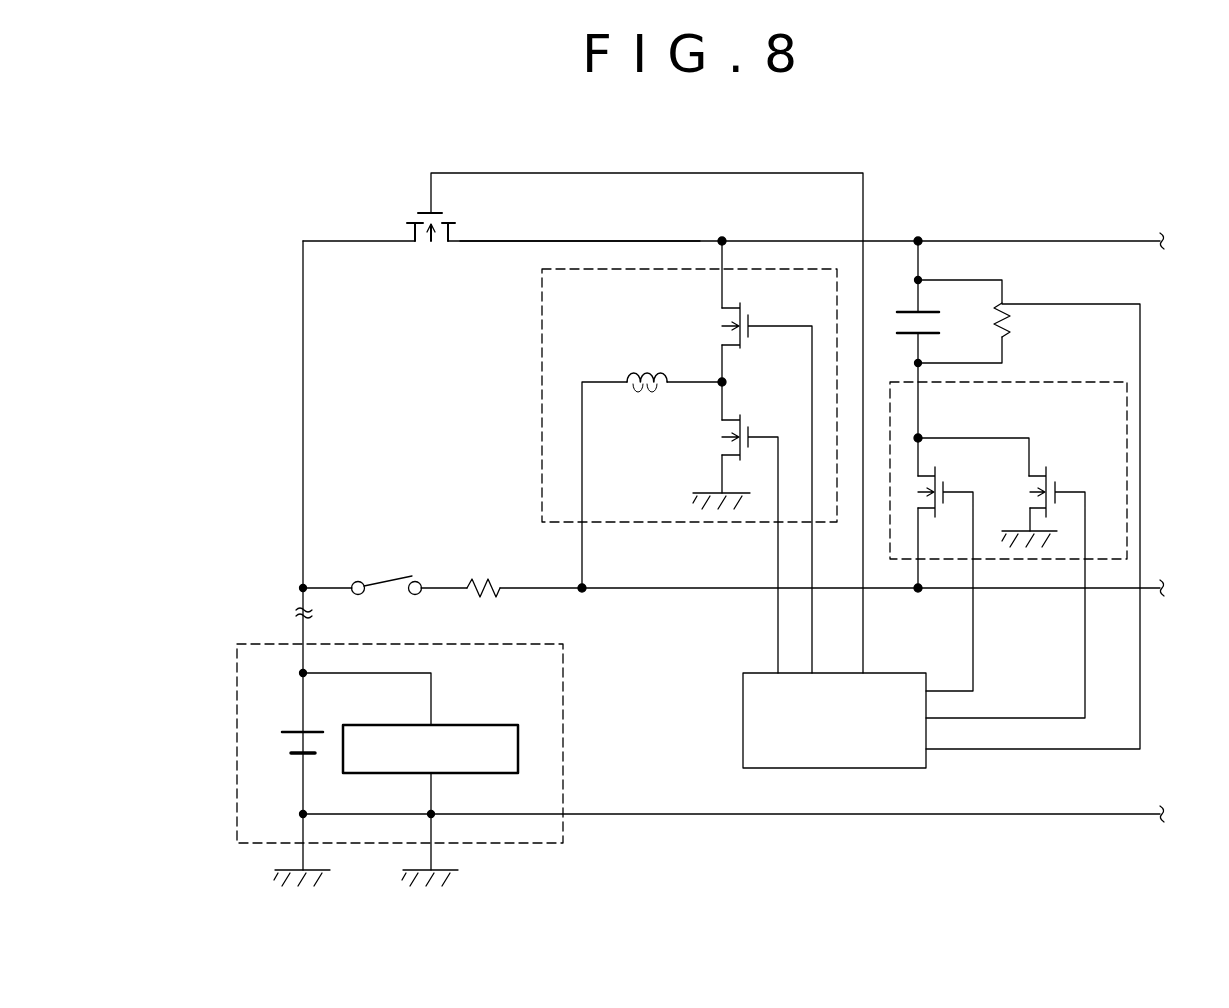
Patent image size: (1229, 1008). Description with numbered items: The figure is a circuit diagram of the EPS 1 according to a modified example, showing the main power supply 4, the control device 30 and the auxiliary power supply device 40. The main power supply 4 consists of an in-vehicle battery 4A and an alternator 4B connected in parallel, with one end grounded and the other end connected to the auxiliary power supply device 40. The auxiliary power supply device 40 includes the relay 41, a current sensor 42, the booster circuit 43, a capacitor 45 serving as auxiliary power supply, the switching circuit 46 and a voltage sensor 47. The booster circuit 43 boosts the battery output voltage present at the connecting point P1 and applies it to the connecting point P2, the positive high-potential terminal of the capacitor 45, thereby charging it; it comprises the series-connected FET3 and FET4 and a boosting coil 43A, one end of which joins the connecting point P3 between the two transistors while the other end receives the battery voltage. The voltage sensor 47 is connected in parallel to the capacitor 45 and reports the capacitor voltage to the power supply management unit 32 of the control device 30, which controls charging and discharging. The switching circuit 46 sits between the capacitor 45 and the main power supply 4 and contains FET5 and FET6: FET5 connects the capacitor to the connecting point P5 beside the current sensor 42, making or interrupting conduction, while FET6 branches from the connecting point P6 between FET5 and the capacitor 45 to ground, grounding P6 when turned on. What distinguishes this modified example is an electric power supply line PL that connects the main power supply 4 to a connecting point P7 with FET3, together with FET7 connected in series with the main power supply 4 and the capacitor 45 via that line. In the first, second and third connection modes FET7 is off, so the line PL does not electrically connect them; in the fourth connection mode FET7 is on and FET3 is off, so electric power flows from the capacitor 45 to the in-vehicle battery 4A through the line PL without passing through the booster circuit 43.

The EPS 1 is at (188, 132).
The FET 7 FET7 is at (398, 200).
The electric power supply line PL is at (572, 238).
The connecting point P7 is at (722, 238).
The connecting point P2 is at (918, 238).
The auxiliary power supply device 40 is at (472, 368).
The booster circuit 43 is at (541, 322).
The boosting coil 43A is at (643, 356).
The FET 3 FET3 is at (784, 305).
The connecting point P3 is at (720, 386).
The FET 4 FET4 is at (756, 427).
The capacitor 45 is at (897, 308).
The voltage sensor 47 is at (1006, 330).
The switching circuit 46 is at (1129, 434).
The connecting point P6 is at (921, 436).
The FET 5 FET5 is at (982, 468).
The FET 6 FET6 is at (1086, 468).
The relay 41 is at (416, 581).
The current sensor 42 is at (487, 582).
The connecting point P1 is at (583, 594).
The connecting point P5 is at (918, 594).
The control device 30 is at (710, 660).
The power supply management unit 32 is at (743, 721).
The main power supply 4 is at (563, 690).
The in-vehicle battery 4A is at (290, 731).
The alternator 4B is at (518, 749).